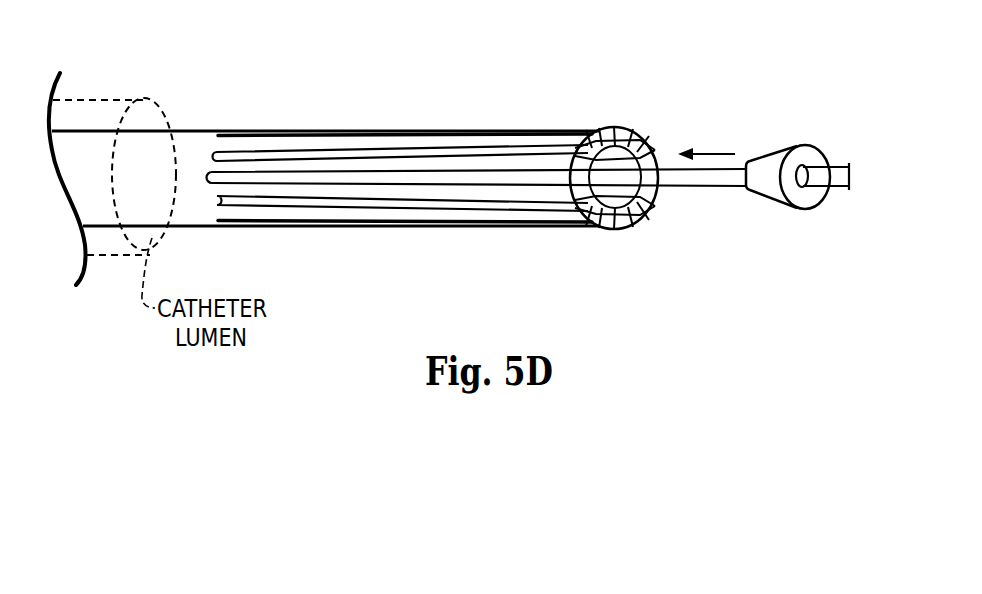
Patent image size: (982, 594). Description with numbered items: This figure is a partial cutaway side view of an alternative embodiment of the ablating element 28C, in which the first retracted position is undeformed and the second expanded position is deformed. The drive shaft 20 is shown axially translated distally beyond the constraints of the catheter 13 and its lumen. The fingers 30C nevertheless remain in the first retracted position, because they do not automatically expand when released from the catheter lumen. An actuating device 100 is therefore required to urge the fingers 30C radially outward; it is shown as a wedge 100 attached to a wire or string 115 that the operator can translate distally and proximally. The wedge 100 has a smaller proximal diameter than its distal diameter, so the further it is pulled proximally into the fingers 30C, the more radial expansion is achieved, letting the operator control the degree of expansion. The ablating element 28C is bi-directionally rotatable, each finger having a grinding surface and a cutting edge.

The drive shaft 20 is at (67, 137).
The catheter 13 is at (132, 101).
The ablating element 28C is at (478, 118).
The fingers 30C is at (656, 158).
The actuating device 100 is at (765, 160).
The wire or string 115 is at (838, 164).